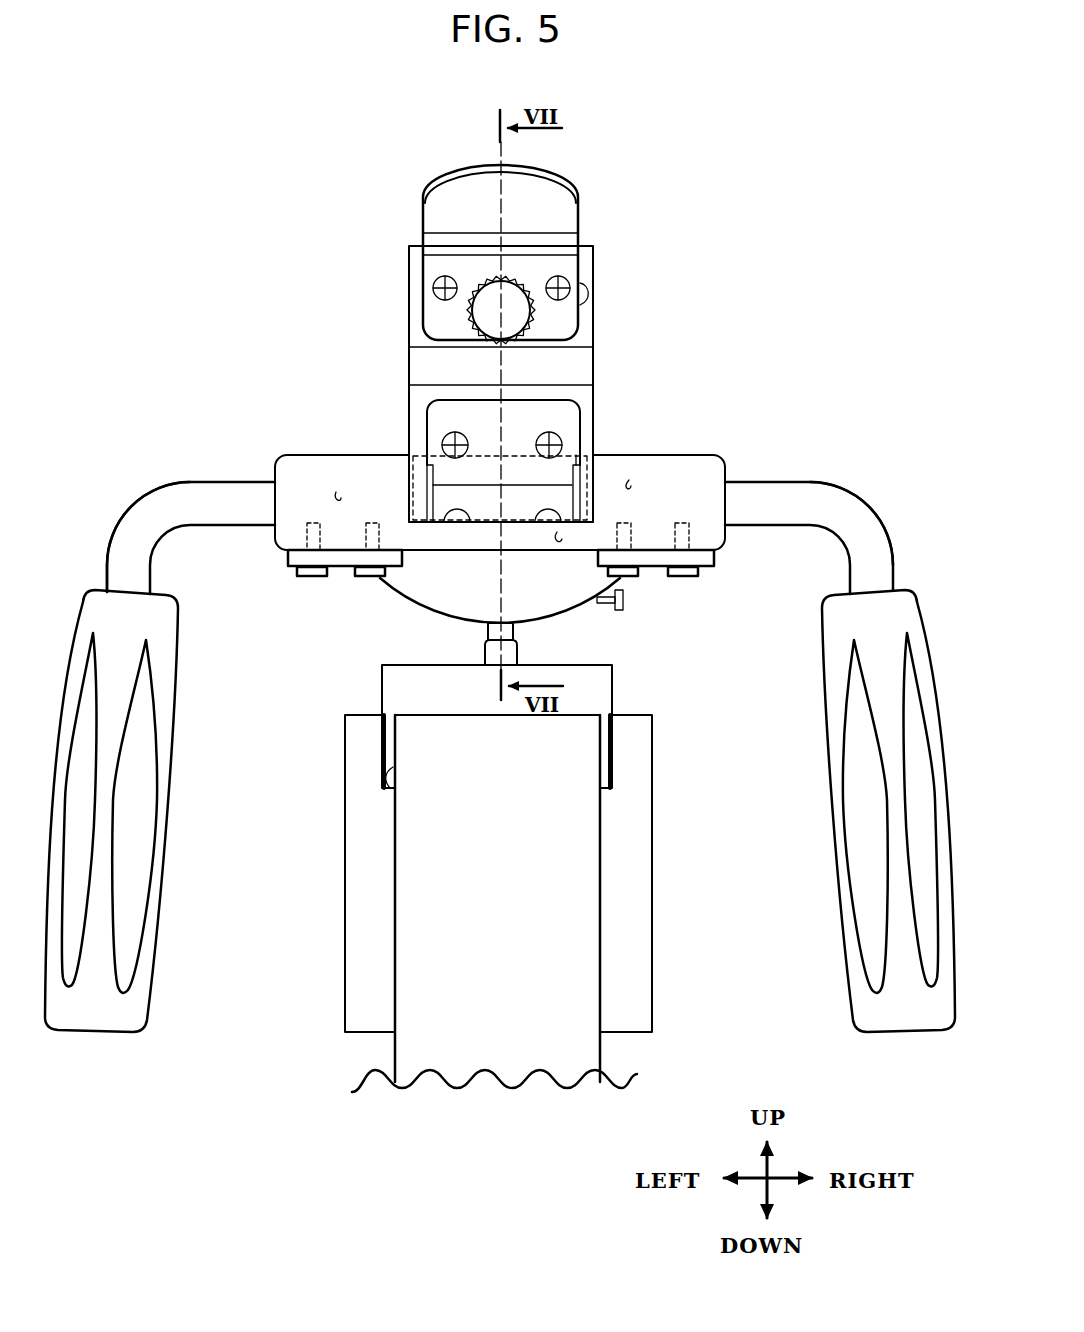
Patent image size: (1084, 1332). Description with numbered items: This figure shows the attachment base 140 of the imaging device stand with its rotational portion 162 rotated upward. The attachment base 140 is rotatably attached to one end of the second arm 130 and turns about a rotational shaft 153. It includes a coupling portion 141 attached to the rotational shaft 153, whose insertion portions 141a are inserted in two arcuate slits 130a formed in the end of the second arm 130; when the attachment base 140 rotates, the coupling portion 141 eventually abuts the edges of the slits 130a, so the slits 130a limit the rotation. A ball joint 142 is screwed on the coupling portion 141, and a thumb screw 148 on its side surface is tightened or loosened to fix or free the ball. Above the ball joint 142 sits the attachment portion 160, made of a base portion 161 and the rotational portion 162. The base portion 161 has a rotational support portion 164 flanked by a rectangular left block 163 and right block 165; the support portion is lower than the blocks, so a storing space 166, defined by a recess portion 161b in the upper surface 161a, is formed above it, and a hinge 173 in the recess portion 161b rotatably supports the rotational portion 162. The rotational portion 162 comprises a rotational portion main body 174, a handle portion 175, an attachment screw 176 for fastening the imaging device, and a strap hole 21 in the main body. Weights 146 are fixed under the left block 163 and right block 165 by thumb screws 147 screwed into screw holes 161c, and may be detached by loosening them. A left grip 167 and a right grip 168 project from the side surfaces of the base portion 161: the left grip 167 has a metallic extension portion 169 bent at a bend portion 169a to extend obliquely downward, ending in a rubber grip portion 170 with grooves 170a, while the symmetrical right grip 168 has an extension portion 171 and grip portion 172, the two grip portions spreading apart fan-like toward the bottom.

The attachment base 140 is at (759, 171).
The handle portion 175 is at (583, 212).
The rotational portion main body 174 is at (597, 278).
The attachment screw 176 is at (477, 282).
The rotational portion 162 is at (408, 317).
The strap hole 21 is at (593, 312).
The hinge 173 is at (445, 400).
The storing space 166 is at (576, 455).
The rotational support portion 164 is at (557, 534).
The right block 165 is at (628, 484).
The left block 163 is at (339, 494).
The base portion 161 is at (275, 470).
The upper surface 161a is at (693, 455).
The recess portion 161b is at (428, 467).
The screw holes 161c is at (367, 528).
The attachment portion 160 is at (731, 457).
The left grip 167 is at (160, 484).
The right grip 168 is at (848, 485).
The extension portion 169 is at (110, 546).
The bend portion 169a is at (137, 503).
The extension portion 171 is at (893, 541).
The weights 146 is at (290, 560).
The thumb screws 147 is at (362, 578).
The ball joint 142 is at (420, 604).
The thumb screw 148 is at (625, 603).
The coupling portion 141 is at (382, 690).
The insertion portions 141a is at (383, 748).
The slits 130a is at (383, 790).
The rotational shaft 153 is at (345, 955).
The second arm 130 is at (391, 1041).
The grip portion 170 is at (143, 940).
The grooves 170a is at (118, 988).
The grip portion 172 is at (852, 945).